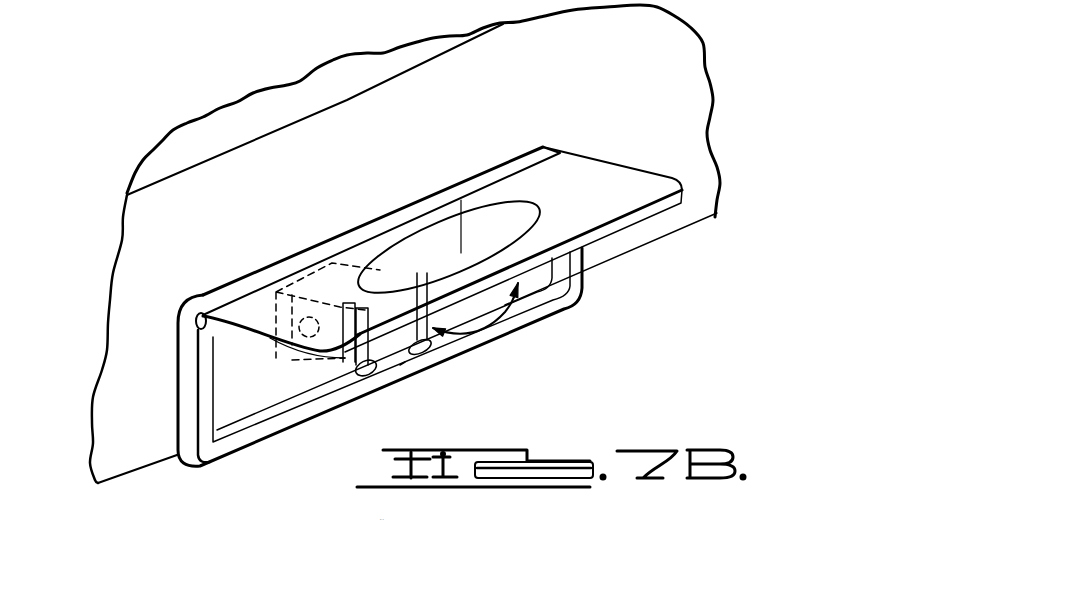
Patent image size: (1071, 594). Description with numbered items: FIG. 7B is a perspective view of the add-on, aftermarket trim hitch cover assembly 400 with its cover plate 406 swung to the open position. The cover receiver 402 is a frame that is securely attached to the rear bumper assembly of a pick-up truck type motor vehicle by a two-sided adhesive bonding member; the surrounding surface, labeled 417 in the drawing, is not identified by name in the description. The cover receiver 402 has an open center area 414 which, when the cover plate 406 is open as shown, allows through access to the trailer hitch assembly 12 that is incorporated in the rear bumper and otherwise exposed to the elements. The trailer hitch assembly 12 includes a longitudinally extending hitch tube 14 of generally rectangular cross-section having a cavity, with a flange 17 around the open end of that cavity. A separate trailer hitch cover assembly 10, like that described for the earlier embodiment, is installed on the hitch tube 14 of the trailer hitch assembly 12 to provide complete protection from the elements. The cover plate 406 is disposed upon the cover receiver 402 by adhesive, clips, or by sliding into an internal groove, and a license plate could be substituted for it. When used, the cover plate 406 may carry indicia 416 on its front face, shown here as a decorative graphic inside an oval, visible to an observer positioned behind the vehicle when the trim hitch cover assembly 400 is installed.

The trailer hitch cover assembly 10 is at (400, 365).
The trailer hitch assembly 12 is at (276, 303).
The hitch tube 14 is at (283, 323).
The flange 17 is at (350, 367).
The trim hitch cover assembly 400 is at (608, 292).
The cover receiver 402 is at (188, 440).
The cover plate 406 is at (647, 178).
The open center area 414 is at (220, 386).
The indicia 416 is at (517, 215).
The wall 417 is at (707, 42).